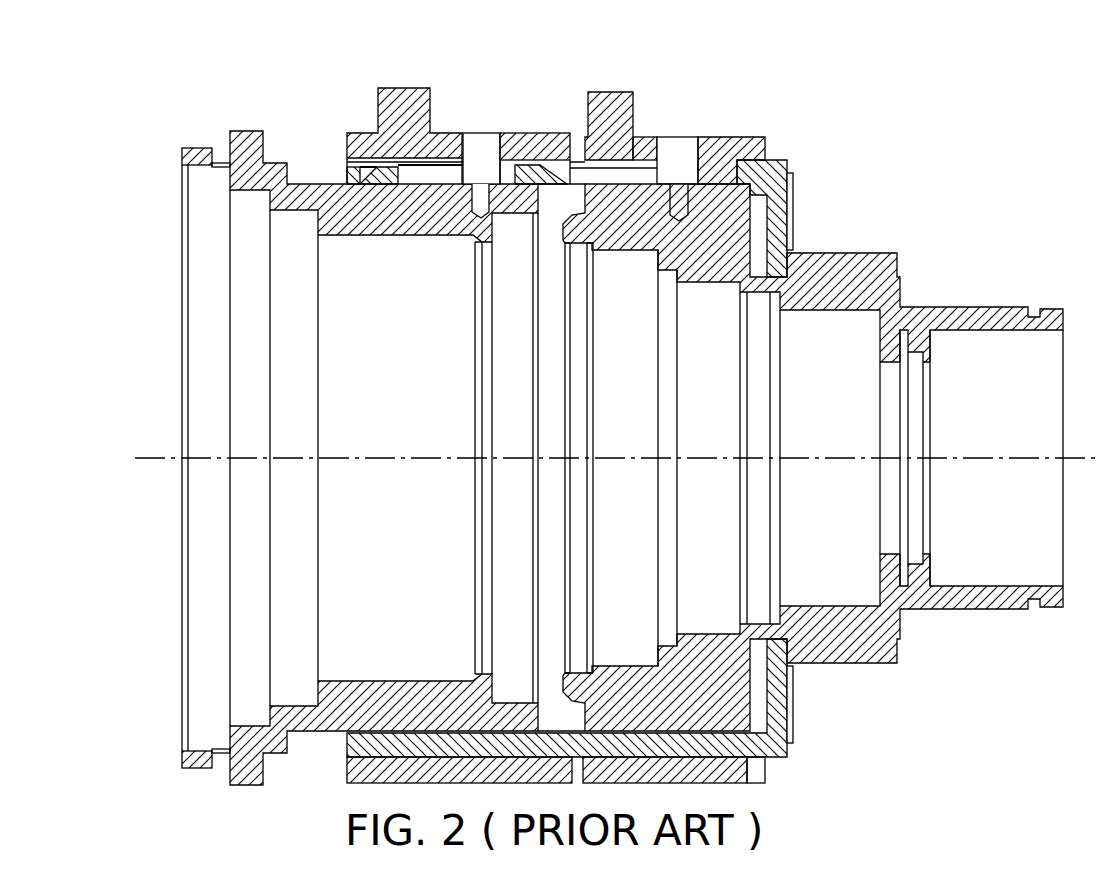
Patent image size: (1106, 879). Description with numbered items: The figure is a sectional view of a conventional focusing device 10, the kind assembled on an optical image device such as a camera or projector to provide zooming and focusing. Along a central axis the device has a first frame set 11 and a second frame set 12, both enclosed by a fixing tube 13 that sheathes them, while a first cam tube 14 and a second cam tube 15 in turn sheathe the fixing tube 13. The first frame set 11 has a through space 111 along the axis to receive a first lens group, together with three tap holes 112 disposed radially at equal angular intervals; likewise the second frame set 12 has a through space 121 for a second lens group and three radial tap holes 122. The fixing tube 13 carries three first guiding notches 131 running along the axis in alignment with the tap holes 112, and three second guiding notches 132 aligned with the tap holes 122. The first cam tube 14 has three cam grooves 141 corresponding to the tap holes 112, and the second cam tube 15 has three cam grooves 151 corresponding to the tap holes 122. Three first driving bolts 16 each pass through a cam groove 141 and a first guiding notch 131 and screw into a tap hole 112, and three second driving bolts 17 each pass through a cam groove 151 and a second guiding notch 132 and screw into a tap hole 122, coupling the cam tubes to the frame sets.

The focusing device 10 is at (907, 170).
The first frame set 11 is at (196, 147).
The through space 111 is at (200, 267).
The tap holes 112 is at (468, 193).
The second frame set 12 is at (745, 238).
The through space 121 is at (843, 320).
The tap holes 122 is at (758, 204).
The fixing tube 13 is at (778, 173).
The first guiding notches 131 is at (508, 168).
The second guiding notches 132 is at (704, 171).
The first cam tube 14 is at (400, 97).
The cam grooves 141 is at (447, 183).
The second cam tube 15 is at (609, 100).
The cam grooves 151 is at (647, 140).
The first driving bolts 16 is at (481, 146).
The second driving bolts 17 is at (678, 147).